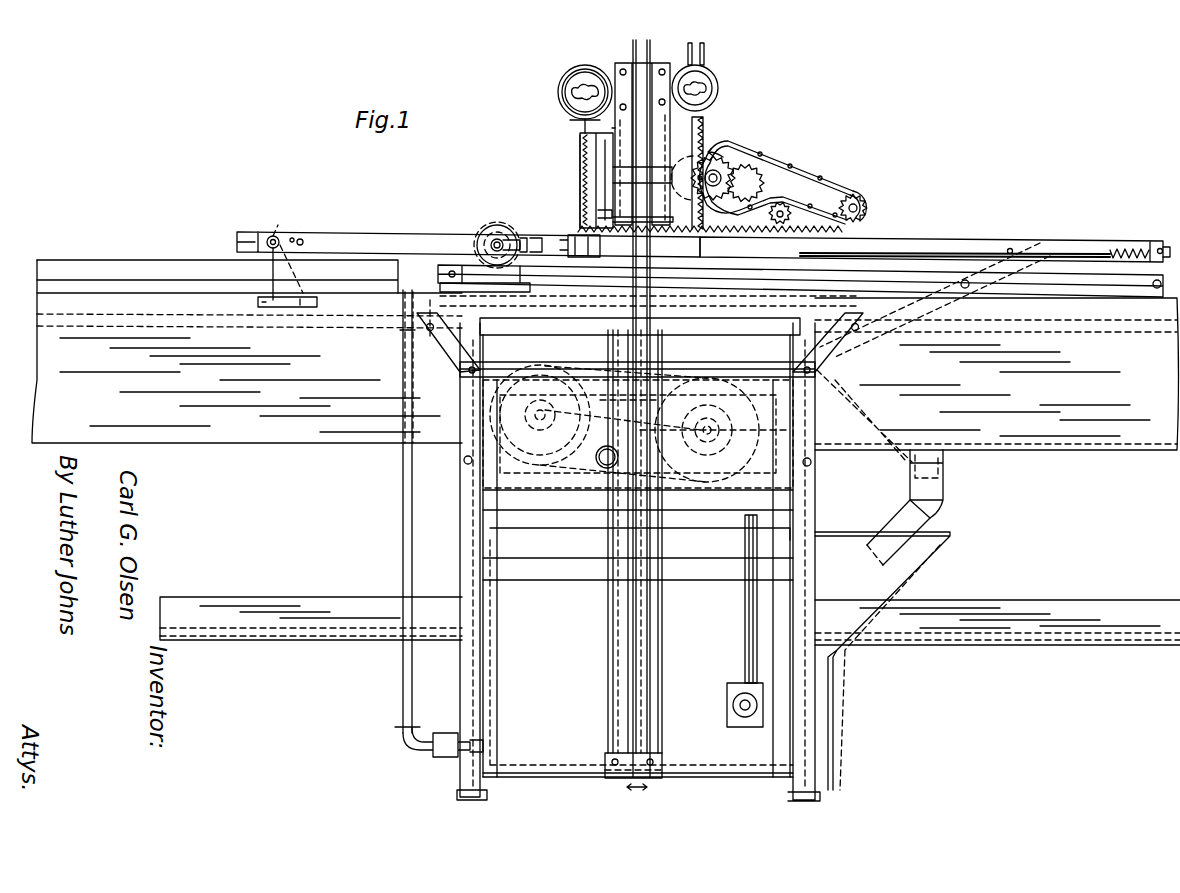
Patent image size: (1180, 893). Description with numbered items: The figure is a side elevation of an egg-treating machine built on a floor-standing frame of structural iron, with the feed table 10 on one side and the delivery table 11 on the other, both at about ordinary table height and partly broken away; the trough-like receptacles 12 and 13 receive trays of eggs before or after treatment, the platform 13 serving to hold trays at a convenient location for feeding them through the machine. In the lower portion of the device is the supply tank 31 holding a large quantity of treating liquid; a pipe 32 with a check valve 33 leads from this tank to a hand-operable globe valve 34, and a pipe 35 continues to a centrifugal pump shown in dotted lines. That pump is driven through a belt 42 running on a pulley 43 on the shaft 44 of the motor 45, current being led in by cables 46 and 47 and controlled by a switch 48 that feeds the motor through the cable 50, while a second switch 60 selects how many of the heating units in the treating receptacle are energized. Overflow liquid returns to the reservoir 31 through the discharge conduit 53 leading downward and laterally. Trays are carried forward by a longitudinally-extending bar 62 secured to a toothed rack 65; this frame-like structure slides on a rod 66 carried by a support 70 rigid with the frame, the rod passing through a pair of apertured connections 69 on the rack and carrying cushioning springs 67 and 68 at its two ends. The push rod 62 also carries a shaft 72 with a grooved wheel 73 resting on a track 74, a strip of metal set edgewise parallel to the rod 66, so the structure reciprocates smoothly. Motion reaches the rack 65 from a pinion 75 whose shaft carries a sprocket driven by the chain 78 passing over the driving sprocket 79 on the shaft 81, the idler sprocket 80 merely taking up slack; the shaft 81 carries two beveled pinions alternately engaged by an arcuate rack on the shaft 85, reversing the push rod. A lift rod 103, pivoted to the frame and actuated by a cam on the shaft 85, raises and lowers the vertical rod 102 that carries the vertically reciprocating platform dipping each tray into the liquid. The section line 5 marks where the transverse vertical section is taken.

The section line 5— 5 is at (655, 36).
The feed table 10 is at (158, 350).
The delivery table 11 is at (1045, 336).
The trough-like receptacle 12 is at (220, 604).
The trough-like receptacle 13 is at (130, 271).
The supply tank 31 is at (683, 557).
The pipe 32 is at (402, 532).
The check valve 33 is at (447, 755).
The hand-operable valve 34 is at (470, 240).
The pipe 35 is at (575, 362).
The belt 42 is at (692, 408).
The pulley 43 is at (740, 412).
The shaft 44 is at (760, 428).
The motor 45 is at (752, 404).
The cable 46 is at (690, 55).
The cable 47 is at (704, 55).
The switch 48 is at (706, 80).
The cable 50 is at (706, 133).
The discharge conduit 53 is at (935, 488).
The switch 60 is at (558, 92).
The longitudinally-extending bar 62 is at (372, 240).
The toothed rack 65 is at (762, 225).
The rod 66 is at (942, 245).
The cushioning spring 67 is at (1133, 246).
The cushioning spring 68 is at (565, 234).
The apertured connections 69 is at (580, 268).
The support 70 is at (982, 242).
The shaft 72 is at (503, 238).
The grooved wheel 73 is at (497, 222).
The track 74 is at (778, 292).
The pinion 75 is at (866, 204).
The chain 78 is at (806, 172).
The driving sprocket 79 is at (740, 163).
The idler sprocket 80 is at (800, 192).
The shaft 81 is at (721, 179).
The shaft 85 is at (600, 163).
The vertical rod 102 is at (628, 67).
The lift rod 103 is at (652, 40).